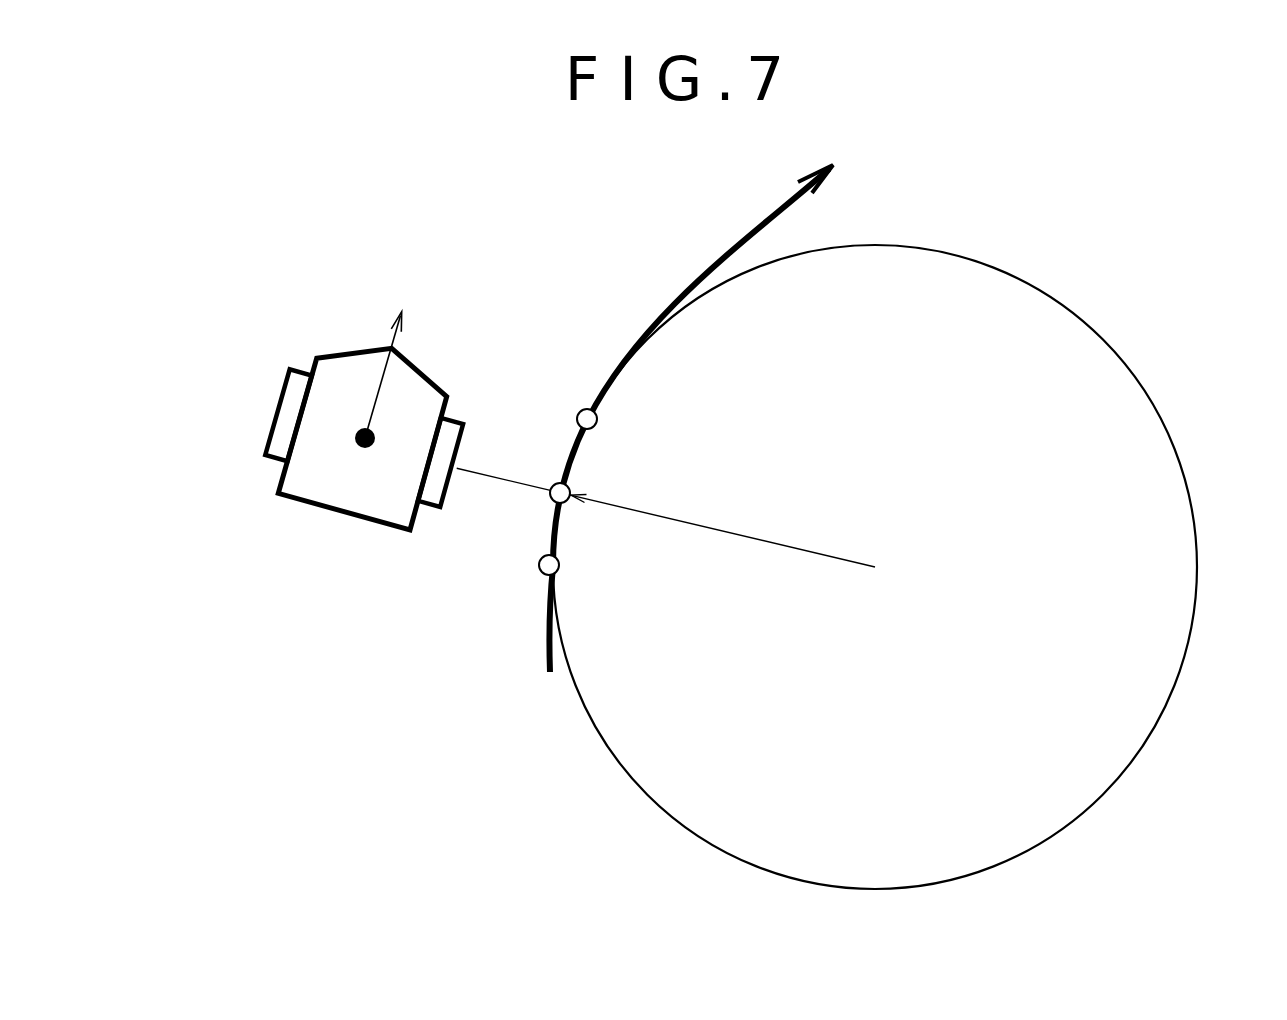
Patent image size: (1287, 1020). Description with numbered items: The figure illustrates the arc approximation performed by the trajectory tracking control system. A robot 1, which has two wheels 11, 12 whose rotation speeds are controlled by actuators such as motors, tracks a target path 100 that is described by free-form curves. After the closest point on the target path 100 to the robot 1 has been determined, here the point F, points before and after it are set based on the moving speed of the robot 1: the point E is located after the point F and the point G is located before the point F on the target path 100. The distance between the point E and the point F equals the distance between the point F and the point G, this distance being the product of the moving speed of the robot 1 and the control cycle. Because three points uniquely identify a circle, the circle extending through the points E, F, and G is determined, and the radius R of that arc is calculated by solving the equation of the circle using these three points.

The robot 1 is at (315, 504).
The wheel 11 is at (273, 412).
The wheel 12 is at (445, 509).
The target path 100 is at (700, 275).
The point E is at (535, 564).
The point F is at (551, 476).
The point G is at (574, 401).
The radius of the arc R is at (666, 517).